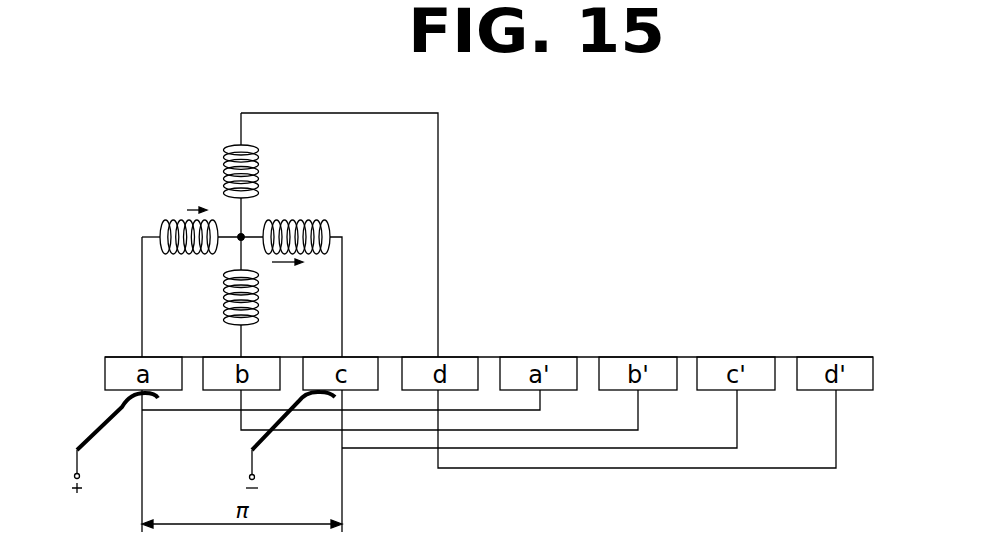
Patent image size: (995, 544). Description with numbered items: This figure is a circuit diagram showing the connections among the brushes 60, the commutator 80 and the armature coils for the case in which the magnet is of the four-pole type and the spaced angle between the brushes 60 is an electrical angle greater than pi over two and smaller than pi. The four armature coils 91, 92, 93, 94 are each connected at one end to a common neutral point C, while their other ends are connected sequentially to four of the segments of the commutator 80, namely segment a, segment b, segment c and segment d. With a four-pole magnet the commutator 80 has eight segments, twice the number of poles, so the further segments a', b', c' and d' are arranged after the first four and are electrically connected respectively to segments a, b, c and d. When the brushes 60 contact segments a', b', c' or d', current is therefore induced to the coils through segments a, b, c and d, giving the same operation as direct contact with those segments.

The coil 91 is at (182, 222).
The coil 92 is at (260, 300).
The coil 93 is at (300, 218).
The coil 94 is at (257, 165).
The neutral point C is at (243, 235).
The commutator 80 is at (616, 305).
The brushes 60 is at (90, 440).